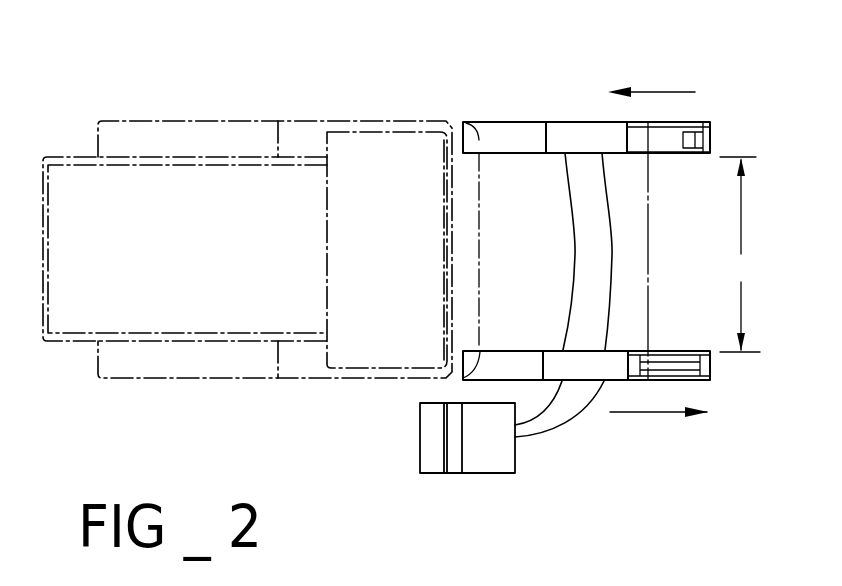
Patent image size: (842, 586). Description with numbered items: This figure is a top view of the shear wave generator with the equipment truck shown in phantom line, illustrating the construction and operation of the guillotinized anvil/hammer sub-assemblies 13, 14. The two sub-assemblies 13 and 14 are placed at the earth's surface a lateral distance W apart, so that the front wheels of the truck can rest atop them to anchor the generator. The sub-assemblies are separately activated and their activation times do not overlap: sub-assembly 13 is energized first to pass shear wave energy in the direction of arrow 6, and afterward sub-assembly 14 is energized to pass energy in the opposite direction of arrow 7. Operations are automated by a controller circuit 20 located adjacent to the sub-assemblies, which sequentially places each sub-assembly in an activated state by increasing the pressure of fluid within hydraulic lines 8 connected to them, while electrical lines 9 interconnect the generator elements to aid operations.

The arrow 6 is at (637, 412).
The arrow 7 is at (675, 92).
The hydraulic lines 8 is at (611, 256).
The electrical lines 9 is at (576, 258).
The anvil/hammer sub-assembly 13 is at (712, 381).
The anvil/hammer sub-assembly 14 is at (711, 130).
The controller circuit 20 is at (450, 477).
The lateral distance W is at (740, 254).